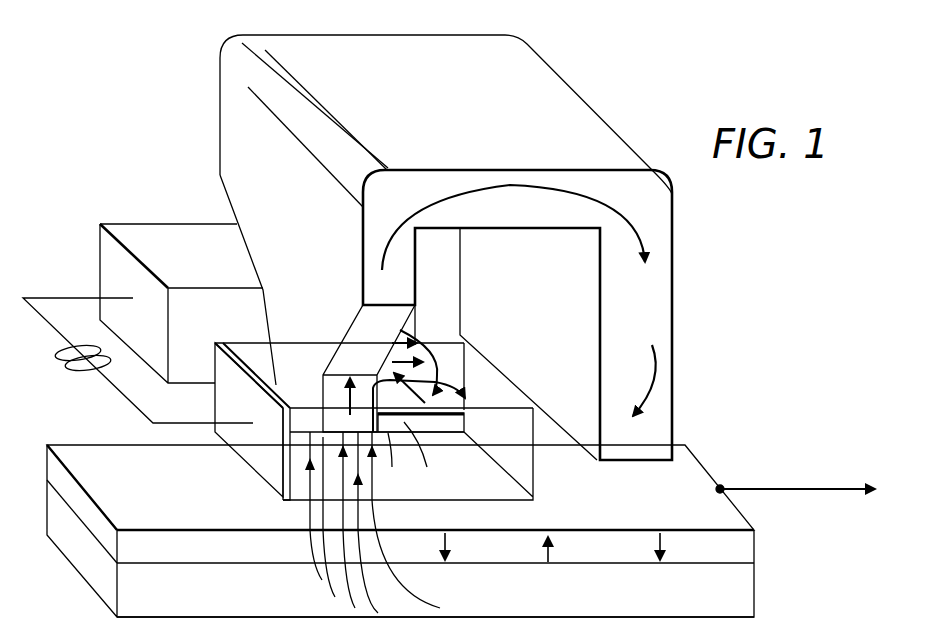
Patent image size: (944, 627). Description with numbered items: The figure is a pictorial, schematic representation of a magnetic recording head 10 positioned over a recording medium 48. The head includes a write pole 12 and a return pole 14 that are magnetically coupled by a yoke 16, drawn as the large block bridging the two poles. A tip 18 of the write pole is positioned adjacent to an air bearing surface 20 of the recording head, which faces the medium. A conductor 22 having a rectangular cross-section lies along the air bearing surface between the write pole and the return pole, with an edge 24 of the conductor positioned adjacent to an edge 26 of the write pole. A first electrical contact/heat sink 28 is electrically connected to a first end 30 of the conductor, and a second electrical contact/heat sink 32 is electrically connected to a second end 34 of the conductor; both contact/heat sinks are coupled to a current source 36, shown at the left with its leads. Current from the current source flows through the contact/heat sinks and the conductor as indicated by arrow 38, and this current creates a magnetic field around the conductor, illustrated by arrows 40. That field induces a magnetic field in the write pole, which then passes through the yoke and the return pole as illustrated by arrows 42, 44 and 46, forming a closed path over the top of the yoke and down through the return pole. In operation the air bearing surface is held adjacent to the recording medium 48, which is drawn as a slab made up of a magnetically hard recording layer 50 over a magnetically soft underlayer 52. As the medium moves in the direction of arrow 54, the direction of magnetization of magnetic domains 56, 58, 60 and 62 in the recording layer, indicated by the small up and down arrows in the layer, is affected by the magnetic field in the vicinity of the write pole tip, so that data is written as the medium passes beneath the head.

The magnetic recording head 10 is at (722, 247).
The write pole 12 is at (322, 327).
The return pole 14 is at (665, 316).
The yoke 16 is at (563, 108).
The tip of the write pole 18 is at (297, 383).
The air bearing surface 20 is at (333, 437).
The conductor 22 is at (445, 427).
The edge of the conductor 24 is at (396, 465).
The edge of the write pole 26 is at (424, 460).
The first electrical contact/heat sink 28 is at (163, 237).
The first end of the conductor 30 is at (404, 343).
The second electrical contact/heat sink 32 is at (527, 476).
The second end of the conductor 34 is at (465, 422).
The current source 36 is at (66, 372).
The arrow indicating current flow 38 is at (420, 378).
The arrows indicating magnetic field around conductor 40 is at (445, 385).
The arrow indicating induced magnetic field 42 is at (352, 400).
The arrow indicating induced magnetic field 44 is at (510, 186).
The arrow indicating induced magnetic field 46 is at (635, 379).
The recording medium 48 is at (775, 582).
The magnetically hard recording layer 50 is at (754, 545).
The magnetically soft underlayer 52 is at (754, 605).
The arrow indicating medium motion 54 is at (802, 488).
The magnetic domain 56 is at (340, 556).
The magnetic domain 58 is at (450, 547).
The magnetic domain 60 is at (558, 547).
The magnetic domain 62 is at (668, 547).